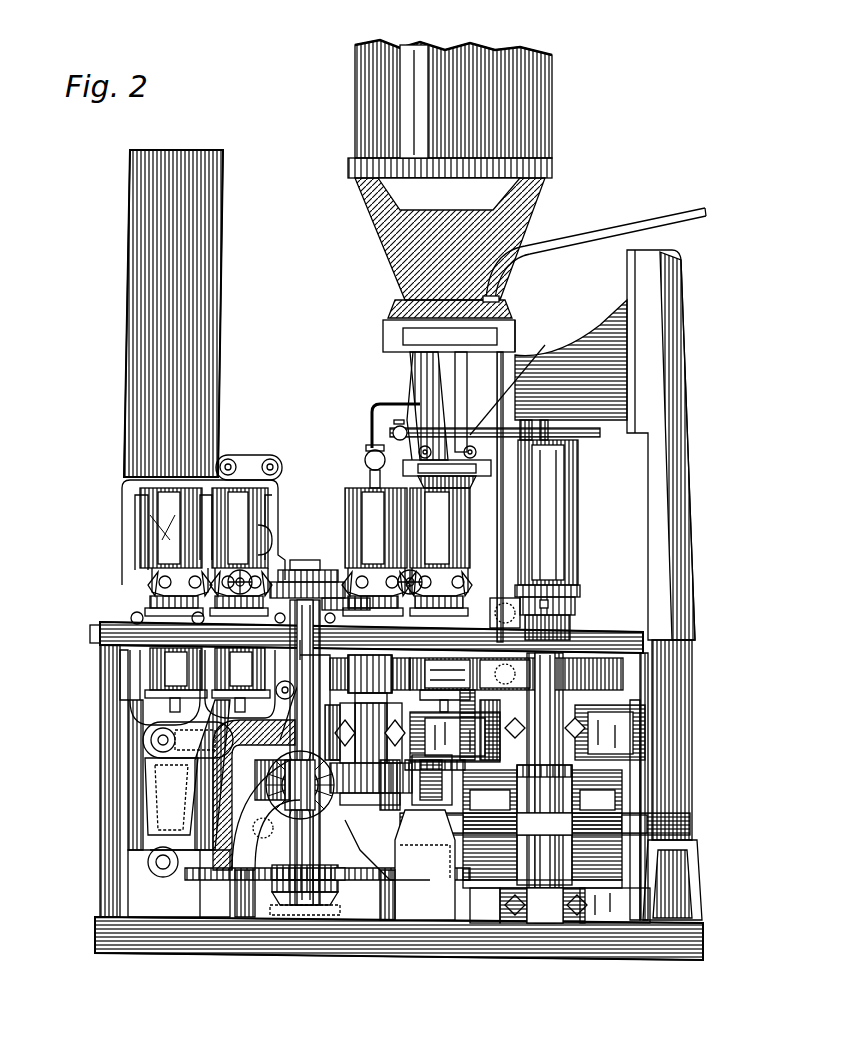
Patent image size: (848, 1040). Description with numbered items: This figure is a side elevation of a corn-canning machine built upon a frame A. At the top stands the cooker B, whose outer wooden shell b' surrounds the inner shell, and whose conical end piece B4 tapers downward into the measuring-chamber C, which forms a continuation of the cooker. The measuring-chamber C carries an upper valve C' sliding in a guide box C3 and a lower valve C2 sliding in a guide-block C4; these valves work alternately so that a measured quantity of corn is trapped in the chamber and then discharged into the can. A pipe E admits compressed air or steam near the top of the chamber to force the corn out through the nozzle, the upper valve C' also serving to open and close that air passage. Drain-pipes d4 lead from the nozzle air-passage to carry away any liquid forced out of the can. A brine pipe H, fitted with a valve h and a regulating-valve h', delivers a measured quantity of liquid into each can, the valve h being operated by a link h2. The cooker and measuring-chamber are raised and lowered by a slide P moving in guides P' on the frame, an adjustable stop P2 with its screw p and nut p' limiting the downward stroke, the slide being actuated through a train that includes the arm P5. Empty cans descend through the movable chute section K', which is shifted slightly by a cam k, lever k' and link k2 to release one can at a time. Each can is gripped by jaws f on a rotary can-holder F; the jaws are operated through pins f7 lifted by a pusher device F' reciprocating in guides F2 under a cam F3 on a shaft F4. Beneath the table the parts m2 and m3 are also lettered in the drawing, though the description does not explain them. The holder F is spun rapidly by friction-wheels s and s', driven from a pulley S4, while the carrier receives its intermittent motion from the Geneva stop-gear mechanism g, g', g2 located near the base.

The cooker B is at (450, 109).
The outer wooden shell b' is at (425, 101).
The conical end piece B4 is at (450, 248).
The pipe E is at (546, 245).
The upper valve C' is at (449, 336).
The guide box C3 is at (508, 322).
The measuring-chamber C is at (414, 406).
The guide-block C4 is at (475, 470).
The drain-pipes d4 is at (444, 454).
The link h2 is at (404, 408).
The regulating-valve h' is at (471, 426).
The valve h is at (363, 466).
The pipe H is at (513, 379).
The slide P is at (541, 471).
The guides P' is at (670, 585).
The adjustable stop P2 is at (565, 473).
The nut p' is at (564, 580).
The adjusting screw p is at (566, 602).
The arm P5 is at (572, 628).
The movable section K' is at (190, 313).
The link k2 is at (247, 458).
The lever k' is at (213, 532).
The cam k is at (320, 566).
The rotary can-holder F is at (165, 530).
The jaws or clamps f is at (168, 530).
The lower valve C2 is at (407, 528).
The pins f7 is at (132, 618).
The frame A is at (396, 791).
The pusher device F' is at (162, 686).
The pivot m2 is at (274, 690).
The rod m3 is at (286, 706).
The guides F2 is at (150, 738).
The cam F3 is at (160, 798).
The shaft F4 is at (160, 863).
The Geneva stop-gear mechanism g is at (291, 757).
The Geneva stop-gear mechanism g2 is at (256, 795).
The Geneva stop-gear mechanism g' is at (274, 923).
The friction-wheel s' is at (371, 730).
The friction-wheel s is at (527, 731).
The pulley S4 is at (545, 788).